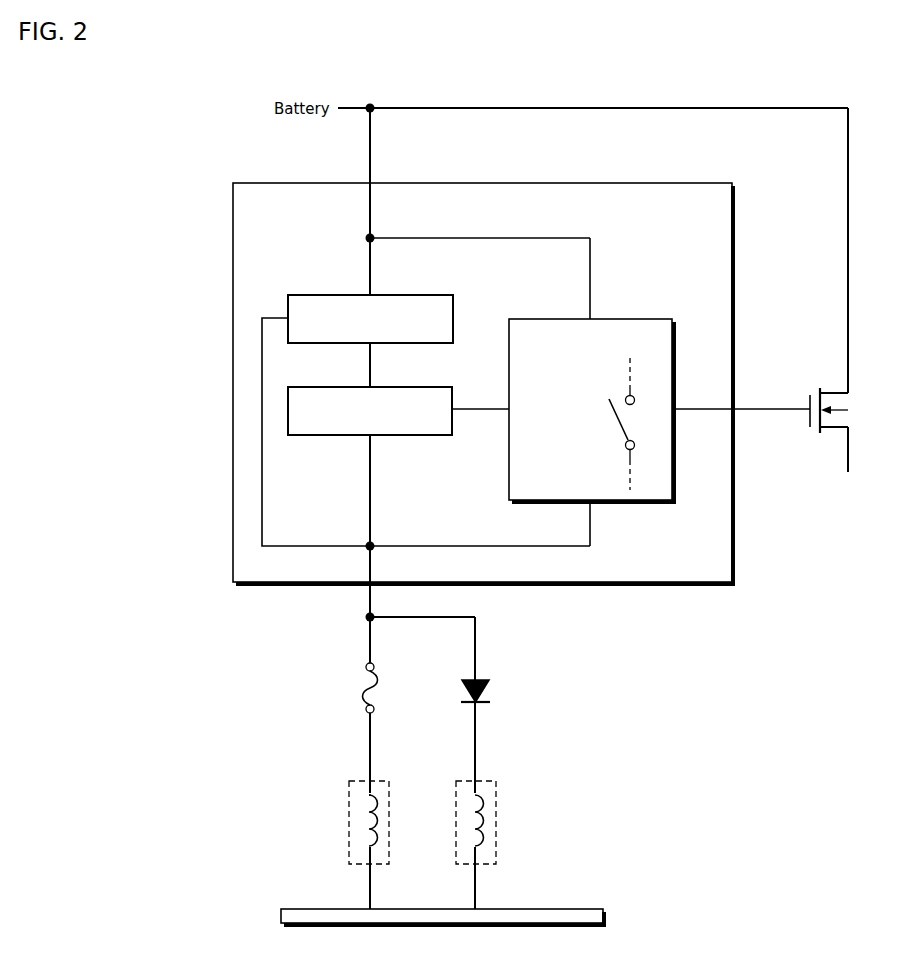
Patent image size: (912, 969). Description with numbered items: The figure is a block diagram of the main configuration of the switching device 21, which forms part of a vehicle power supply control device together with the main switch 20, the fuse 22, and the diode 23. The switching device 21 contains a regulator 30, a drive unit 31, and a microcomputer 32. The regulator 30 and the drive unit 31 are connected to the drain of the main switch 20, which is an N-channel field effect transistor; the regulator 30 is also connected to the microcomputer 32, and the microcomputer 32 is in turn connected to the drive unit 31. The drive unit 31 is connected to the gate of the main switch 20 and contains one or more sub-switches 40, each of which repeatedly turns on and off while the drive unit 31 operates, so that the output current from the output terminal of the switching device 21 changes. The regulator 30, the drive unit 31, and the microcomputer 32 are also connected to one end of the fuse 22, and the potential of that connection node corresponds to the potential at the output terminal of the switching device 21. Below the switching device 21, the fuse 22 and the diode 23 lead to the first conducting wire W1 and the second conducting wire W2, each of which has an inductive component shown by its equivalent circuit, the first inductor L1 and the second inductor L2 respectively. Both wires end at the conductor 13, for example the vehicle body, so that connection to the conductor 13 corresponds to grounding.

The switching device 21 is at (292, 182).
The regulator 30 is at (395, 294).
The microcomputer 32 is at (395, 386).
The drive unit 31 is at (615, 319).
The sub-switch 40 is at (612, 424).
The main switch 20 is at (816, 388).
The fuse 22 is at (358, 690).
The diode 23 is at (494, 688).
The first conducting wire W1 is at (349, 781).
The second conducting wire W2 is at (496, 781).
The first inductor L1 is at (365, 818).
The second inductor L2 is at (487, 818).
The conductor 13 is at (558, 908).